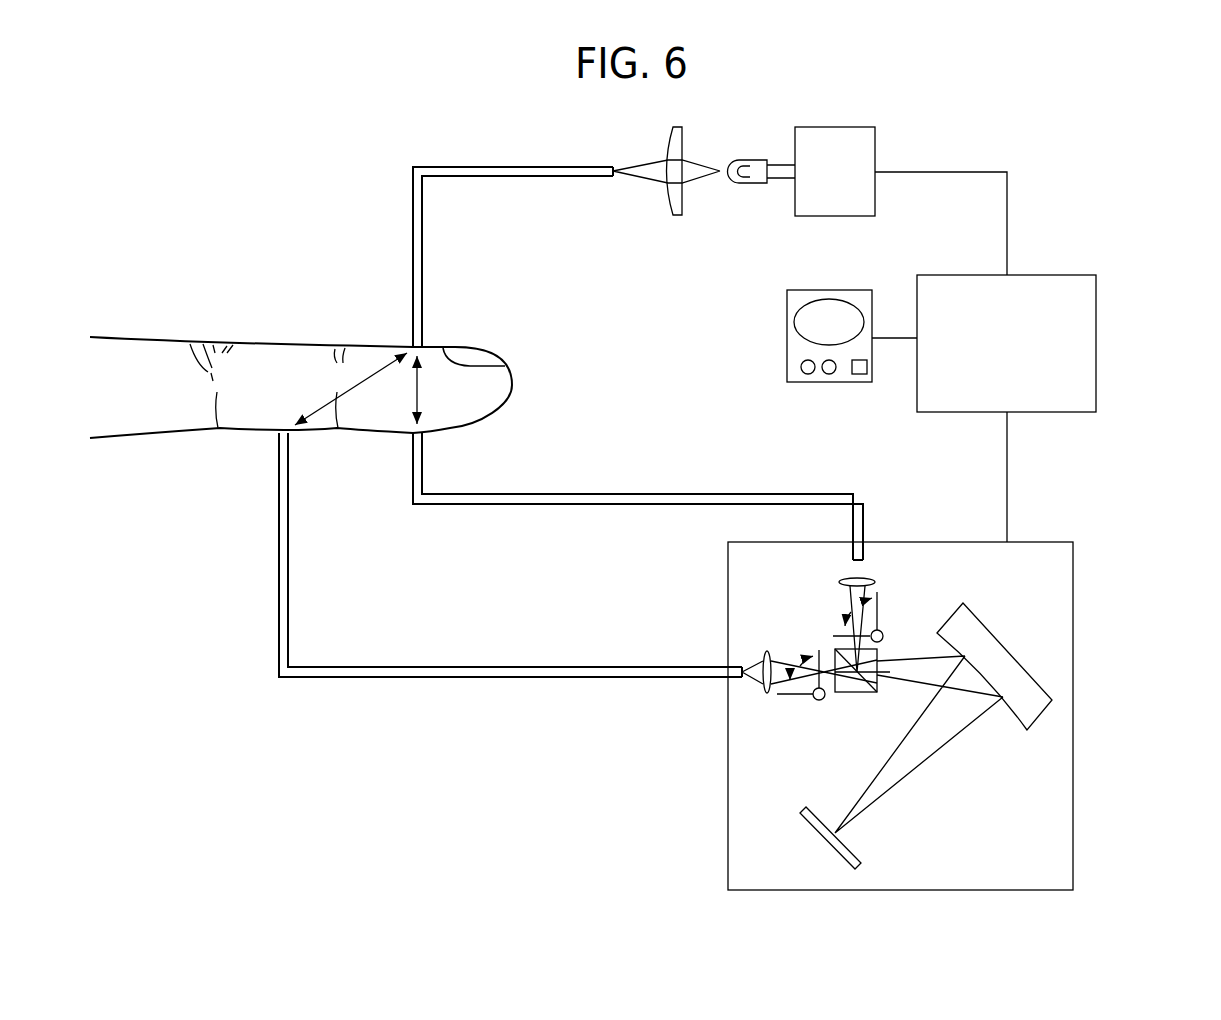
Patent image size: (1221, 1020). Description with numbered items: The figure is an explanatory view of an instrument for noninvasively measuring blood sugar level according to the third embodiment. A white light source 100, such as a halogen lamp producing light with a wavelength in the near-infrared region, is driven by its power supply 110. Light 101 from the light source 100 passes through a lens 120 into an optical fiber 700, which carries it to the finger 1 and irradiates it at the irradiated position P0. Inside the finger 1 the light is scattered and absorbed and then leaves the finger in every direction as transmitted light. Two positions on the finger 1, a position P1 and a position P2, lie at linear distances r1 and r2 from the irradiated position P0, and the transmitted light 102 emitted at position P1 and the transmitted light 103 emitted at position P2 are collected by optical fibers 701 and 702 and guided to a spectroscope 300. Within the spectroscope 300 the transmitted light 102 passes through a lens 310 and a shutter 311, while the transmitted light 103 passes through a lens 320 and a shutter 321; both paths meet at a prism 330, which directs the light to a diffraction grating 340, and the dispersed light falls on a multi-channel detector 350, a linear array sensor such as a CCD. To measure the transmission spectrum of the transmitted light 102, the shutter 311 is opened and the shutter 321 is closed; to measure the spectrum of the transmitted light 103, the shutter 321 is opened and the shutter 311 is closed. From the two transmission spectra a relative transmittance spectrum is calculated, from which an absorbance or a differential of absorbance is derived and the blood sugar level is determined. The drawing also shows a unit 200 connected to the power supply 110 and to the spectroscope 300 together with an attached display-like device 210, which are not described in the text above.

The finger 1 is at (135, 355).
The white light source 100 is at (748, 175).
The light 101 is at (627, 187).
The transmitted light 102 is at (830, 605).
The transmitted light 103 is at (782, 648).
The power supply 110 is at (876, 137).
The lens 120 is at (677, 215).
The control / processing unit 200 is at (1097, 330).
The display device 210 is at (787, 343).
The spectroscope 300 is at (1074, 562).
The lens 310 is at (866, 578).
The shutter 311 is at (878, 612).
The lens 320 is at (760, 692).
The shutter 321 is at (793, 700).
The prism 330 is at (852, 698).
The diffraction grating 340 is at (1037, 712).
The multi-channel detector 350 is at (838, 872).
The optical fiber 700 is at (412, 230).
The optical fiber 701 is at (562, 493).
The optical fiber 702 is at (490, 667).
The irradiated position P0 is at (437, 331).
The position P1 is at (398, 448).
The position P2 is at (270, 447).
The linear distance r1 is at (401, 390).
The linear distance r2 is at (325, 402).